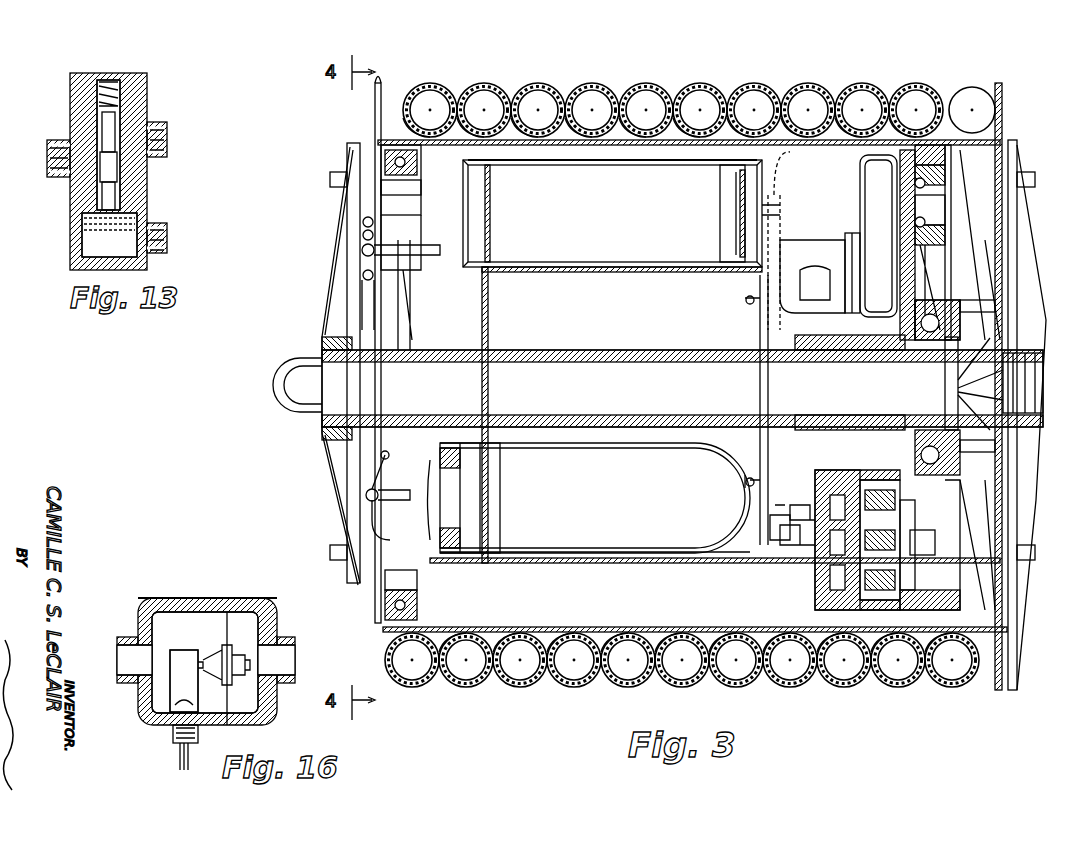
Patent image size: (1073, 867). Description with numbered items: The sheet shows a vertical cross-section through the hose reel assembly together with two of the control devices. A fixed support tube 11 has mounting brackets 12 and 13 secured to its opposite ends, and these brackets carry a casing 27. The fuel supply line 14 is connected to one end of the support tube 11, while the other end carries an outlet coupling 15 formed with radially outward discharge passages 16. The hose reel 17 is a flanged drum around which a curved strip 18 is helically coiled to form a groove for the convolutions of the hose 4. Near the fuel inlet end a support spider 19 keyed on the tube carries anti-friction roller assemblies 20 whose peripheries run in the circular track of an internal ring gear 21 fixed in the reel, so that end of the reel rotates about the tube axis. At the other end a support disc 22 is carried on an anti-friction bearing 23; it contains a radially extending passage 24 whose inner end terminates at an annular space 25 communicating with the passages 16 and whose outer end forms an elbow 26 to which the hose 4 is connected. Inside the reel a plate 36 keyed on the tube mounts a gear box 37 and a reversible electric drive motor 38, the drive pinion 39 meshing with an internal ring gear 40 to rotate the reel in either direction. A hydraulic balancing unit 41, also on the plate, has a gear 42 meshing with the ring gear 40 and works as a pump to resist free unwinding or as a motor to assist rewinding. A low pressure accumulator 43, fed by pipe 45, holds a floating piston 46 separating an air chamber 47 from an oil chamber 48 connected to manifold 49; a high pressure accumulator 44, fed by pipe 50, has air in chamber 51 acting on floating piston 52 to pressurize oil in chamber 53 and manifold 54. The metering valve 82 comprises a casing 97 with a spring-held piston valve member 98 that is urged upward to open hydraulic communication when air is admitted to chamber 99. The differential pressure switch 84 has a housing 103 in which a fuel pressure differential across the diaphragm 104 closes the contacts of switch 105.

In FIG. 3, the hose 4 is at (862, 88).
In FIG. 3, the fixed support tube 11 is at (640, 352).
In FIG. 3, the mounting bracket 12 is at (1020, 290).
In FIG. 3, the mounting bracket 13 is at (340, 270).
In FIG. 3, the fuel supply line 14 is at (290, 408).
In FIG. 3, the outlet coupling 15 is at (965, 383).
In FIG. 3, the discharge passages 16 is at (960, 415).
In FIG. 3, the hose reel 17 is at (384, 100).
In FIG. 3, the extruded strip 18 is at (690, 118).
In FIG. 3, the support spider 19 is at (412, 318).
In FIG. 3, the anti-friction roller assemblies 20 is at (410, 170).
In FIG. 3, the internal ring gear 21 is at (375, 150).
In FIG. 3, the support disc 22 is at (986, 560).
In FIG. 3, the anti-friction bearing 23 is at (930, 476).
In FIG. 3, the radially extending passage 24 is at (982, 242).
In FIG. 3, the annular space 25 is at (975, 322).
In FIG. 3, the elbow 26 is at (985, 84).
In FIG. 3, the casing 27 is at (348, 206).
In FIG. 3, the plate 36 is at (838, 438).
In FIG. 3, the gear box 37 is at (870, 186).
In FIG. 3, the reversible electric drive motor 38 is at (818, 242).
In FIG. 3, the drive pinion 39 is at (932, 226).
In FIG. 3, the internal ring gear 40 is at (945, 150).
In FIG. 3, the hydraulic balancing unit 41 is at (815, 576).
In FIG. 3, the gear 42 is at (930, 540).
In FIG. 3, the low pressure accumulator 43 is at (552, 170).
In FIG. 3, the high pressure accumulator 44 is at (582, 590).
In FIG. 3, the pipe 45 is at (788, 162).
In FIG. 3, the floating piston 46 is at (735, 200).
In FIG. 3, the air chamber 47 is at (746, 200).
In FIG. 3, the oil chamber 48 is at (612, 213).
In FIG. 3, the manifold 49 is at (363, 251).
In FIG. 3, the pipe 50 is at (760, 290).
In FIG. 3, the chamber 51 is at (595, 498).
In FIG. 3, the floating piston 52 is at (440, 522).
In FIG. 3, the chamber 53 is at (432, 478).
In FIG. 3, the manifold 54 is at (366, 496).
In FIG. 13, the metering valve 82 is at (158, 191).
In FIG. 13, the casing 97 is at (76, 116).
In FIG. 13, the piston valve member 98 is at (118, 123).
In FIG. 13, the chamber 99 is at (92, 246).
In FIG. 16, the differential pressure switch 84 is at (212, 592).
In FIG. 16, the housing 103 is at (167, 598).
In FIG. 16, the diaphragm 104 is at (225, 640).
In FIG. 16, the switch 105 is at (176, 655).